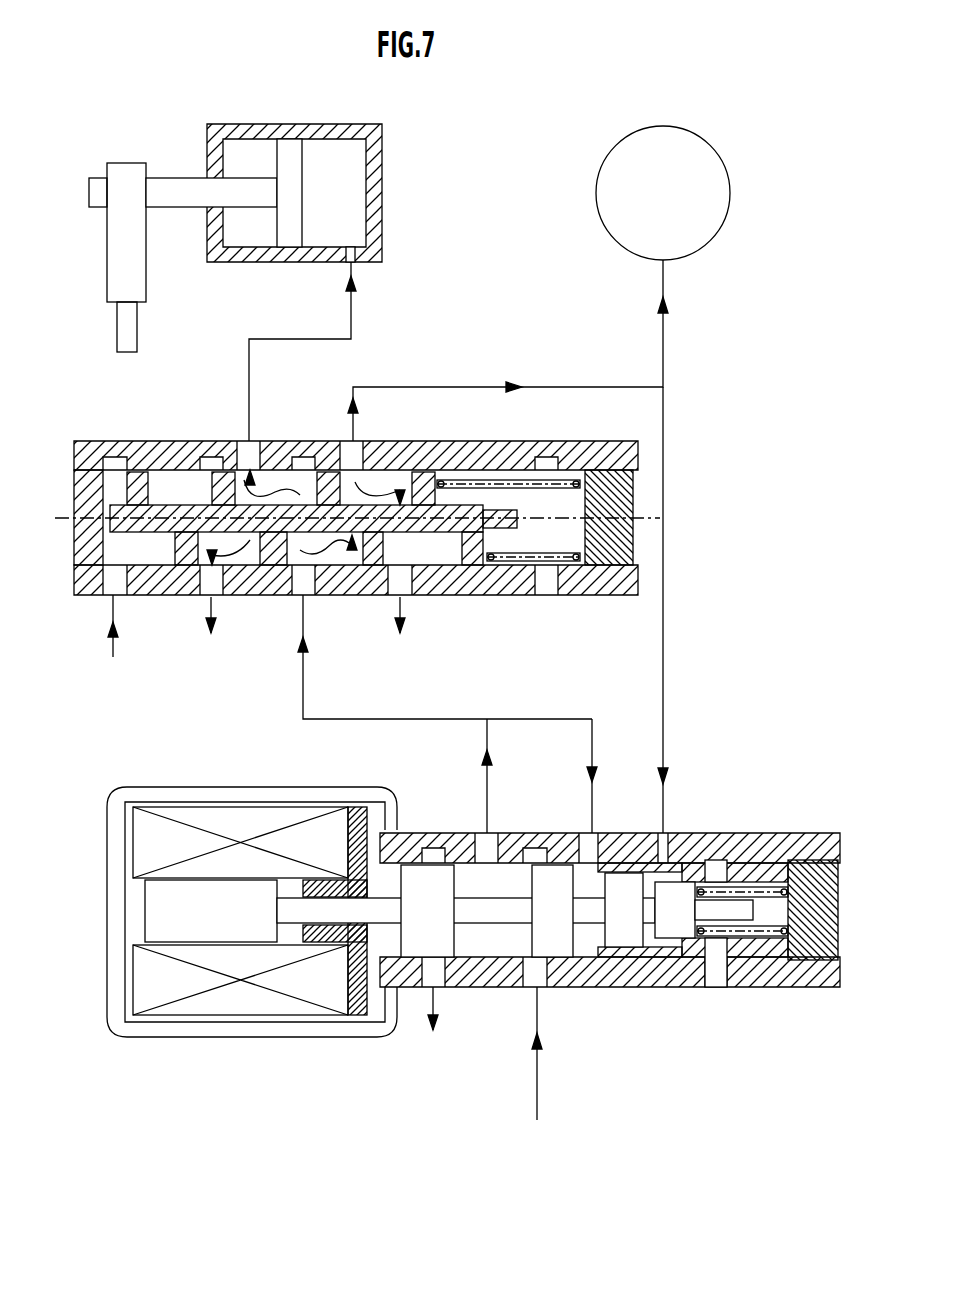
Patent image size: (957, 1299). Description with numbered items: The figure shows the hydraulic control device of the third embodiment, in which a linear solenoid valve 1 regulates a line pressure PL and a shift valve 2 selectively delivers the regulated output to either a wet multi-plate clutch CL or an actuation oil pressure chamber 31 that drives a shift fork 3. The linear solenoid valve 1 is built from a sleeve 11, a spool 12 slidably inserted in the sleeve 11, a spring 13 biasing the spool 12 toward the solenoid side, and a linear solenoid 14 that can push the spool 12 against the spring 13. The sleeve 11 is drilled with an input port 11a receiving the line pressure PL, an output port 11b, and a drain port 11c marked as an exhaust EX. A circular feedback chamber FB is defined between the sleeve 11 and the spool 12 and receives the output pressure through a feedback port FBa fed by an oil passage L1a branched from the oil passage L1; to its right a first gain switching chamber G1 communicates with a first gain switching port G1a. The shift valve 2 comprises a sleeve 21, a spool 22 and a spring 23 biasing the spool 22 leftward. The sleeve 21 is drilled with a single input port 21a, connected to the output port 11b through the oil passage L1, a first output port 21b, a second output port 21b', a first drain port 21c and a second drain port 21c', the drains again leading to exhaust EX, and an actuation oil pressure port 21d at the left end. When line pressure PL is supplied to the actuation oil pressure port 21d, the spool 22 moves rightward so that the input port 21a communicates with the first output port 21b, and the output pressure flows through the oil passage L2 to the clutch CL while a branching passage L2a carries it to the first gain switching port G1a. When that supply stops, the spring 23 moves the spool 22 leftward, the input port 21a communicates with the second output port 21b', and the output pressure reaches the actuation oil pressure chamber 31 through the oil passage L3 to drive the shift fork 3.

The linear solenoid valve 1 is at (473, 919).
The shift valve 2 is at (357, 534).
The shift fork 3 is at (117, 234).
The actuation oil pressure chamber 31 is at (264, 193).
The sleeve 11 is at (610, 887).
The input port 11a is at (565, 1051).
The output port 11b is at (461, 812).
The drain port 11c is at (463, 1020).
The spool 12 is at (515, 857).
The spring 13 is at (742, 958).
The linear solenoid 14 is at (252, 884).
The sleeve 21 is at (356, 495).
The input port 21a is at (445, 627).
The first output port 21b is at (381, 450).
The second output port 21b' is at (242, 446).
The first drain port 21c is at (430, 627).
The second drain port 21c' is at (244, 599).
The actuation oil pressure port 21d is at (144, 626).
The spool 22 is at (313, 482).
The spring 23 is at (508, 483).
The wet multi-plate clutch CL is at (663, 193).
The line pressure PL is at (325, 912).
The exhaust / drain EX is at (322, 853).
The oil passage L1 is at (461, 776).
The oil passage L1a is at (561, 776).
The oil passage L2 is at (533, 350).
The branching passage L2a is at (694, 610).
The oil passage L3 is at (302, 351).
The feedback chamber FB is at (608, 991).
The feedback port FBa is at (562, 820).
The first gain switching chamber G1 is at (660, 991).
The first gain switching port G1a is at (636, 818).